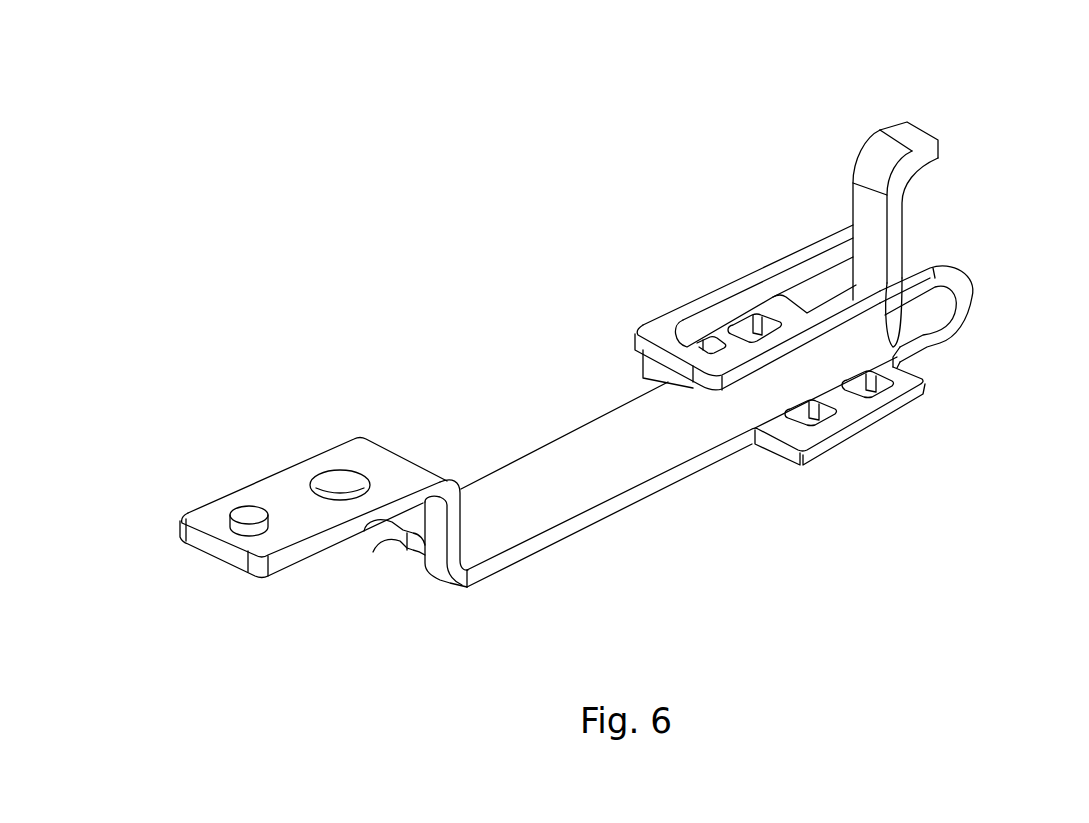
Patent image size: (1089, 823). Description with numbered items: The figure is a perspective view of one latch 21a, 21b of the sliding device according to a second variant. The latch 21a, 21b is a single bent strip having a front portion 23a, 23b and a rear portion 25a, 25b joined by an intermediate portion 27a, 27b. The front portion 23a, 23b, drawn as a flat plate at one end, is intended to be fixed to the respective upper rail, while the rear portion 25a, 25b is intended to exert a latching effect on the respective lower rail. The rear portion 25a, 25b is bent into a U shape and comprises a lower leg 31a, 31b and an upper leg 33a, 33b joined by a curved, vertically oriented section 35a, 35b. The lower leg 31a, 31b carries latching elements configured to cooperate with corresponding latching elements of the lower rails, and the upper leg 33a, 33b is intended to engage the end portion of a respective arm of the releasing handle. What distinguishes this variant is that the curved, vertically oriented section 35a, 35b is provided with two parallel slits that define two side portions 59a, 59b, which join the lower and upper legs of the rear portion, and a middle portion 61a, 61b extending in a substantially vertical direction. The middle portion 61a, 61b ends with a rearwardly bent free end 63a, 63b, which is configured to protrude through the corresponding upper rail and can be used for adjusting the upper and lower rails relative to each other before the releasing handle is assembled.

The latch 21a is at (628, 338).
The latch 21b is at (452, 240).
The front portion 23a is at (313, 483).
The front portion 23b is at (290, 482).
The rear portion 25a is at (913, 451).
The rear portion 25b is at (872, 422).
The intermediate portion 27a is at (473, 559).
The intermediate portion 27b is at (435, 547).
The lower leg 31a is at (693, 468).
The lower leg 31b is at (747, 412).
The upper leg 33a is at (713, 307).
The upper leg 33b is at (657, 337).
The curved, vertically oriented section 35a is at (975, 395).
The curved, vertically oriented section 35b is at (945, 345).
The side portion 59a is at (978, 292).
The side portion 59b is at (968, 313).
The middle portion 61a is at (792, 238).
The middle portion 61b is at (870, 213).
The rearwardly bent free end 63a is at (941, 98).
The rearwardly bent free end 63b is at (917, 133).